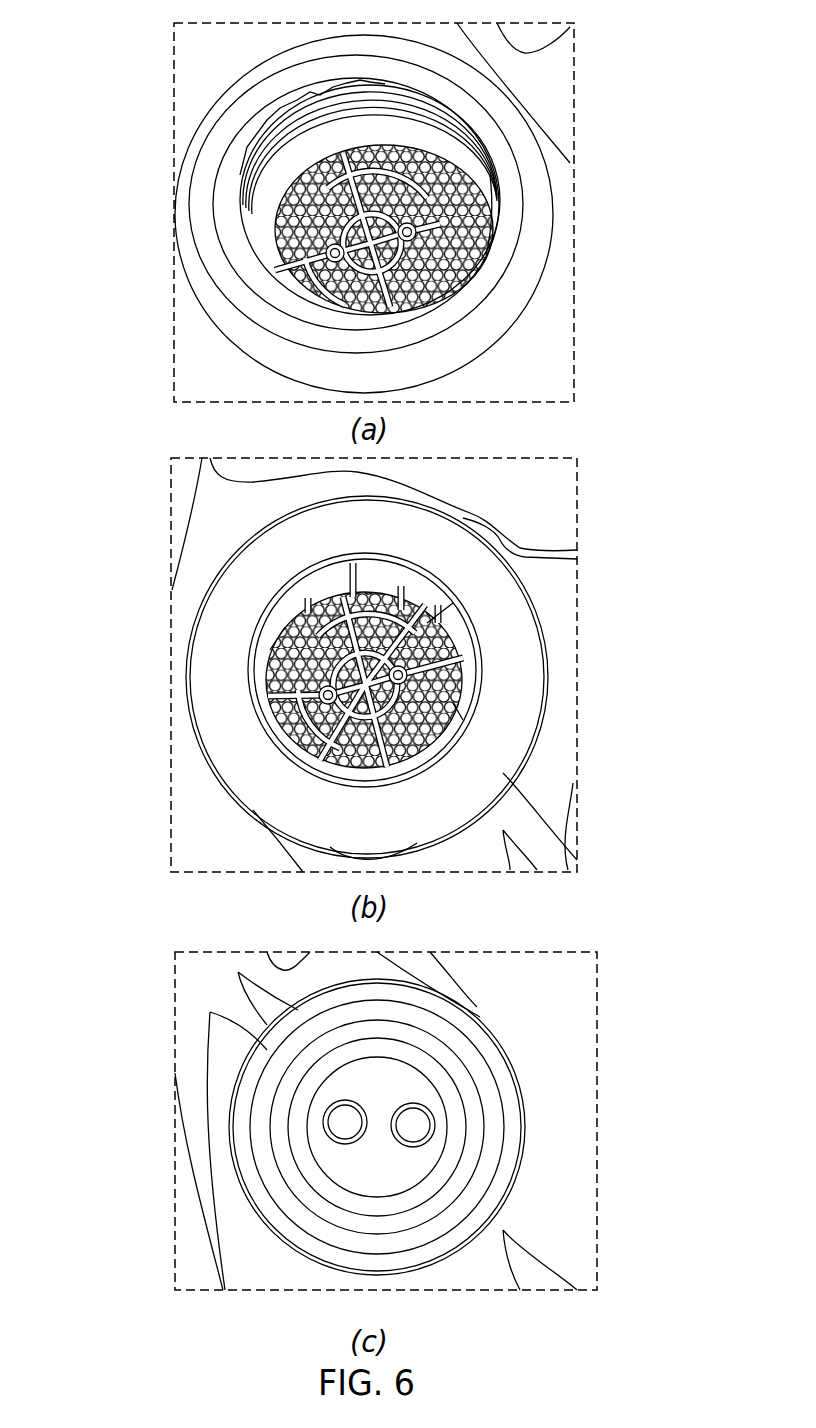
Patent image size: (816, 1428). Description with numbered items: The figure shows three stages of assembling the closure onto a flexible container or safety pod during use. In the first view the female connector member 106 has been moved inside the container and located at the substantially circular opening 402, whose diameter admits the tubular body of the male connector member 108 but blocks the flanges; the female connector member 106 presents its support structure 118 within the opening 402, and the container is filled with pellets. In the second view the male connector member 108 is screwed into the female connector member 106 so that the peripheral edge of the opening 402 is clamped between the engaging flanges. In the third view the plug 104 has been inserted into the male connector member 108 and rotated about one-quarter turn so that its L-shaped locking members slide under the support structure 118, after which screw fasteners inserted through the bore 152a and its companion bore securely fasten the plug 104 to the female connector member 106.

The circular opening 402 is at (525, 190).
The female connector member 106 is at (443, 150).
The support structure 118 is at (280, 237).
The male connector member 108 is at (503, 643).
The plug 104 is at (493, 1113).
The bore 152a is at (343, 1118).